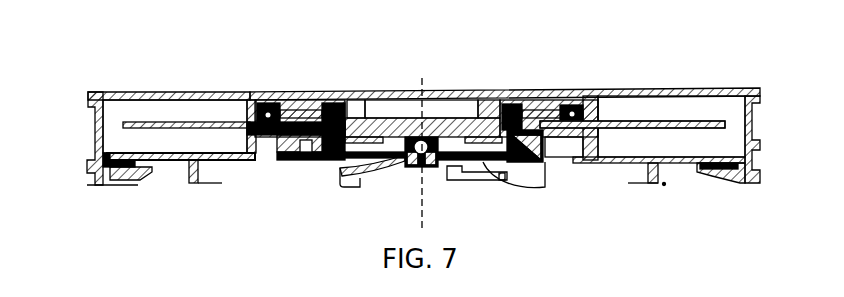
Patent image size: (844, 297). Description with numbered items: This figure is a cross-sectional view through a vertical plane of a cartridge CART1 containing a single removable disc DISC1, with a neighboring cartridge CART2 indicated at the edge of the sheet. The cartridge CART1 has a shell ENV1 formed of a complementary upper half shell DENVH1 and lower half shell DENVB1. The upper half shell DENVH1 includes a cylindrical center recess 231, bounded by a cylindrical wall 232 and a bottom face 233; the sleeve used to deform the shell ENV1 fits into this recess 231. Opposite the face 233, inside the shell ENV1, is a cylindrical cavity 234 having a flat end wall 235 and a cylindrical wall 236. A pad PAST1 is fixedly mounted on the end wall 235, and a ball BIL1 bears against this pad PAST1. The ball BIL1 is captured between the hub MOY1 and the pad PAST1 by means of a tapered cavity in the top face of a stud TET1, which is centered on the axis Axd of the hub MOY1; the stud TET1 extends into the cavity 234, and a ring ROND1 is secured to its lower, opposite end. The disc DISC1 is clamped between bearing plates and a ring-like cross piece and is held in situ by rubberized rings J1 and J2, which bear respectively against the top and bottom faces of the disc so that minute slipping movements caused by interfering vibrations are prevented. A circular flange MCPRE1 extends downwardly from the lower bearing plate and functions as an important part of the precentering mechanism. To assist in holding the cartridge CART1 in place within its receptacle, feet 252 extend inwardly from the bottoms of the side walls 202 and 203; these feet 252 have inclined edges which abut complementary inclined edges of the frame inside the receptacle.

The side wall 202 is at (95, 115).
The side wall 203 is at (757, 107).
The cylindrical center recess 231 is at (367, 97).
The cylindrical wall 232 is at (467, 95).
The bottom face 233 is at (410, 140).
The cylindrical cavity 234 is at (433, 140).
The flat end wall 235 is at (512, 170).
The cylindrical wall 236 is at (342, 172).
The feet 252 is at (100, 187).
The upper half shell DENVH1 is at (181, 92).
The lower half shell DENVB1 is at (103, 187).
The disc DISC1 is at (206, 133).
The circular flange MCPRE1 is at (194, 186).
The rubberized ring J1 is at (262, 137).
The rubberized ring J2 is at (318, 140).
The ball BIL1 is at (402, 97).
The pad PAST1 is at (445, 97).
The ring ROND1 is at (377, 173).
The stud TET1 is at (413, 172).
The hub MOY1 is at (545, 163).
The cartridge CART1 is at (700, 88).
The cartridge CART2 is at (798, 284).
The shell ENV1 is at (760, 146).
The axis Axd is at (424, 228).